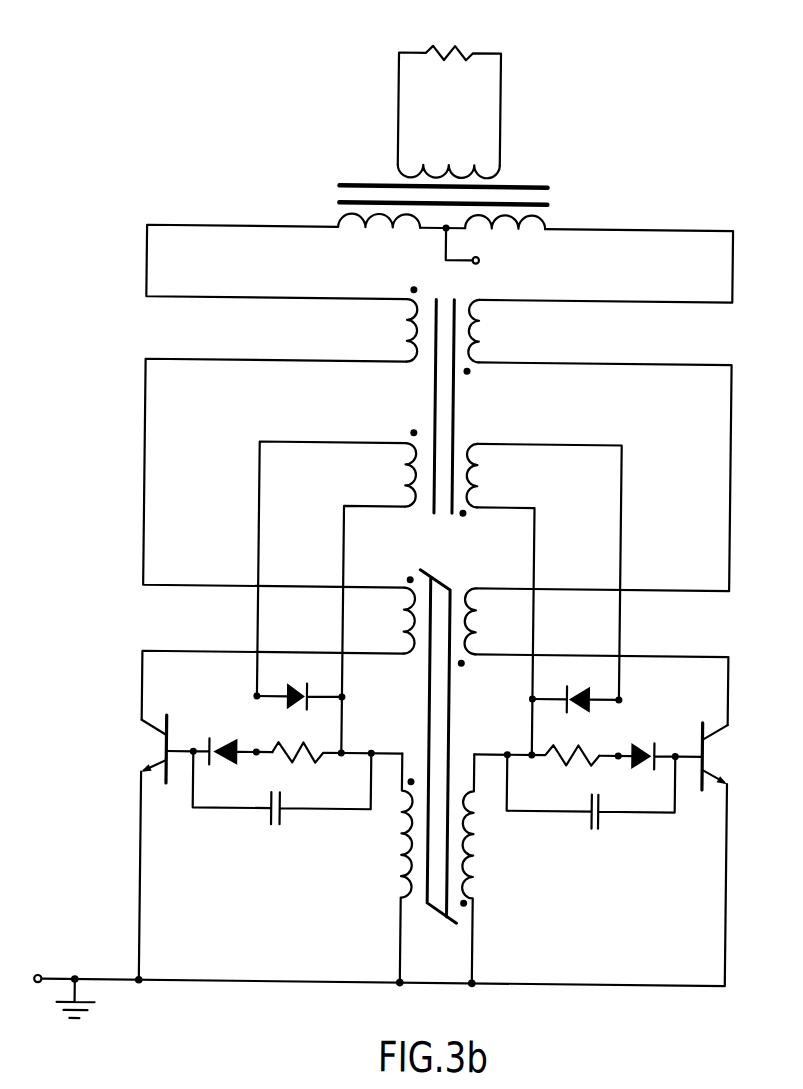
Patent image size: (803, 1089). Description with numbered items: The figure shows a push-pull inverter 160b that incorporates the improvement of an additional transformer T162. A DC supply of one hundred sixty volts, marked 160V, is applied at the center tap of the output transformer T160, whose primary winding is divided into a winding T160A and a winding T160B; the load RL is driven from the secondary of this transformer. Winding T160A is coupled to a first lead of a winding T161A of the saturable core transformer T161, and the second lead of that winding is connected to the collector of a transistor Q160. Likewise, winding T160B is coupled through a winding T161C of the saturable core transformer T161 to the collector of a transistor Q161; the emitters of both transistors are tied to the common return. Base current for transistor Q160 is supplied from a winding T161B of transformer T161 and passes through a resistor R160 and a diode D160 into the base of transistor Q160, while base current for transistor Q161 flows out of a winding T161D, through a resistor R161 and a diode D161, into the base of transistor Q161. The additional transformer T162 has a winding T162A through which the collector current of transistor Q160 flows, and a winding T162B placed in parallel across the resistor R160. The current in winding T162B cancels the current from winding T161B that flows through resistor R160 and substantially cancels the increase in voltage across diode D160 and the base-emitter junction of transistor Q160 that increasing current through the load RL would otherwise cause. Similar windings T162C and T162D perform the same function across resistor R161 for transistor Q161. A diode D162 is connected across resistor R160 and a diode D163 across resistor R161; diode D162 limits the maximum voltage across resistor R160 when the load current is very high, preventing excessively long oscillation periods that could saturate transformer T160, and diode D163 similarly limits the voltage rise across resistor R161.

The push-pull inverter 160b is at (646, 171).
The load RL is at (450, 43).
The transformer T160 is at (542, 185).
The winding T160A is at (368, 232).
The winding T160B is at (539, 232).
The DC supply voltage 160V is at (473, 264).
The additional transformer T162 is at (452, 396).
The winding T162A is at (410, 340).
The winding T162B is at (410, 482).
The winding T162C is at (478, 340).
The winding T162D is at (474, 482).
The saturable core transformer T161 is at (445, 572).
The winding T161A is at (402, 600).
The winding T161B is at (402, 883).
The winding T161C is at (475, 600).
The winding T161D is at (478, 882).
The diode D160 is at (222, 738).
The diode D161 is at (648, 740).
The diode D162 is at (292, 684).
The diode D163 is at (575, 684).
The resistor R160 is at (320, 756).
The resistor R161 is at (580, 765).
The transistor Q160 is at (162, 733).
The transistor Q161 is at (730, 736).